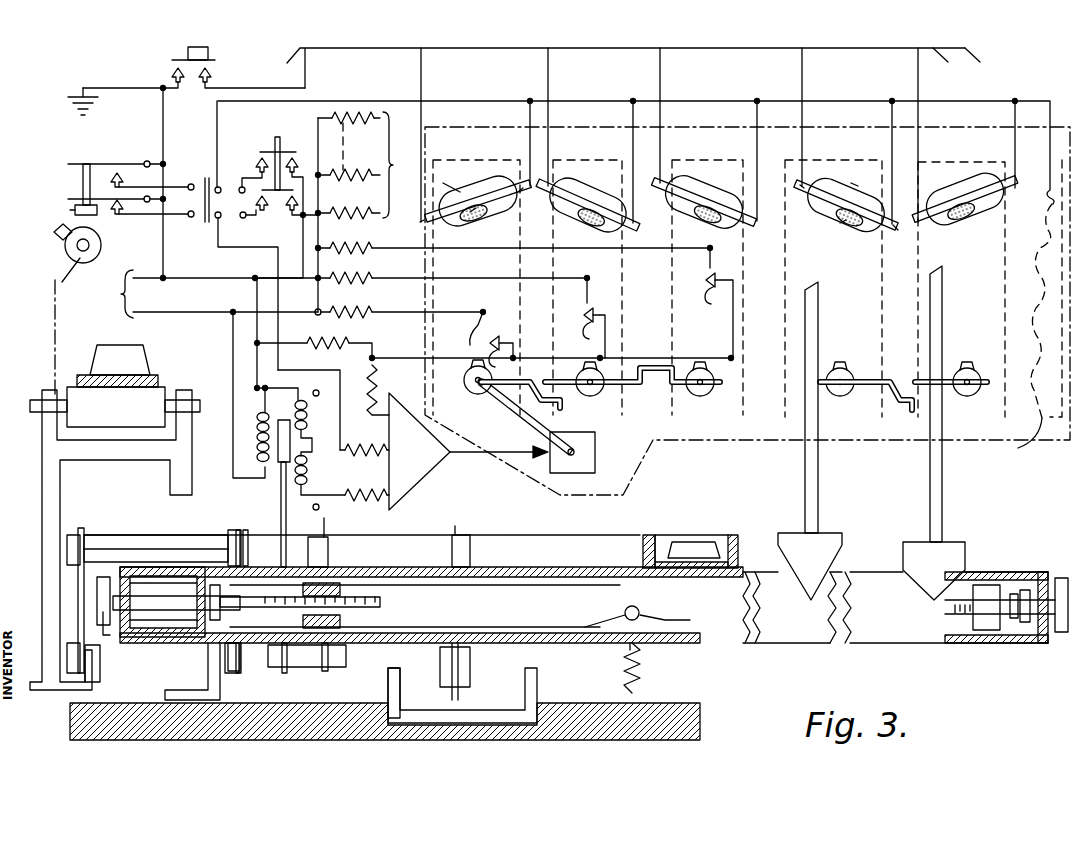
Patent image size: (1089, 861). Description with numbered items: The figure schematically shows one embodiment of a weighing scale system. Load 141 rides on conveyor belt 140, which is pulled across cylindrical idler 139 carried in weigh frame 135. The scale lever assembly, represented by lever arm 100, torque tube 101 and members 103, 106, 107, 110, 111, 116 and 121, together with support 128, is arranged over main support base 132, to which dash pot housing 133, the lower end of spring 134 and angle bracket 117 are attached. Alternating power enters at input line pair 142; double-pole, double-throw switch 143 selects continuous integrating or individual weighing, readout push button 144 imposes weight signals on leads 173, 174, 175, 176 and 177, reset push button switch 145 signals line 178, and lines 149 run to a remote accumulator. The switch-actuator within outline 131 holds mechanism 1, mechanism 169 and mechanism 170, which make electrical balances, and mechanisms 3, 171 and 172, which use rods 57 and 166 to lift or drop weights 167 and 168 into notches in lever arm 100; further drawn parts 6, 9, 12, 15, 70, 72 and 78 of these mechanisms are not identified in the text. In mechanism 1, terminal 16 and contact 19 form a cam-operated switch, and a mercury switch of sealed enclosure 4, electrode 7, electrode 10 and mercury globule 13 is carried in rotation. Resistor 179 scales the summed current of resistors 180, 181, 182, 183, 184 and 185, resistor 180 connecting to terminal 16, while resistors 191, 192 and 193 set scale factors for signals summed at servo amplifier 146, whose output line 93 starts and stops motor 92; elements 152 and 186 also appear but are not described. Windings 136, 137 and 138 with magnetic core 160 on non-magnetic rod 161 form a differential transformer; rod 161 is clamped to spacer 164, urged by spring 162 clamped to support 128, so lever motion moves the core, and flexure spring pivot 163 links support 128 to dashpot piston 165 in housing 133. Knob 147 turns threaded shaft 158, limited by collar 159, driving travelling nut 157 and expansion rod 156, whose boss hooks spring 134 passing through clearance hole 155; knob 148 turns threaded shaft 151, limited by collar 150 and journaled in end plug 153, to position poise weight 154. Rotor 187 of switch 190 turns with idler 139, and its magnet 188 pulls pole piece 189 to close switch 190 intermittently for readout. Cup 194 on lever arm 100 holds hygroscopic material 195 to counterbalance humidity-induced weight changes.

The mechanism 1 is at (486, 175).
The mechanism 3 is at (845, 190).
The sealed enclosure 4 is at (451, 182).
The switch envelope 6 is at (858, 176).
The electrode 7 is at (525, 190).
The switch arm 9 is at (899, 234).
The electrode 10 is at (420, 222).
The pivot 12 is at (802, 190).
The mercury globule 13 is at (480, 212).
The mercury 15 is at (852, 218).
The terminal 16 is at (482, 316).
The contact 19 is at (501, 342).
The rod 57 is at (818, 298).
The cam wheel 70 is at (464, 377).
The cam wheel 72 is at (842, 368).
The link 78 is at (520, 416).
The motor 92 is at (596, 452).
The output line 93 is at (499, 445).
The lever arm 100 is at (510, 568).
The torque tube 101 is at (148, 562).
The scale lever assembly member 103 is at (156, 548).
The scale lever assembly member 106 is at (90, 545).
The scale lever assembly member 107 is at (228, 532).
The scale lever assembly member 110 is at (80, 532).
The scale lever assembly member 111 is at (247, 530).
The scale lever assembly member 116 is at (92, 662).
The angle bracket 117 is at (178, 690).
The scale lever assembly member 121 is at (248, 659).
The support 128 is at (413, 589).
The switch-actuator outline 131 is at (1070, 127).
The main support base 132 is at (700, 710).
The dash pot housing 133 is at (388, 687).
The spring 134 is at (640, 612).
The weigh frame 135 is at (25, 532).
The winding 136 is at (257, 440).
The winding 137 is at (307, 432).
The winding 138 is at (307, 477).
The cylindrical idler 139 is at (115, 407).
The conveyor belt 140 is at (158, 381).
The load 141 is at (120, 360).
The input line pair 142 is at (186, 332).
The double-pole, double-throw switch 143 is at (225, 235).
The readout push button 144 is at (271, 200).
The reset push button switch 145 is at (194, 59).
The servo amplifier 146 is at (419, 451).
The knob 147 is at (106, 630).
The knob 148 is at (1062, 634).
The lines 149 is at (972, 61).
The collar 150 is at (1010, 632).
The threaded shaft 151 is at (1025, 588).
The housing 152 is at (975, 642).
The end plug 153 is at (1045, 580).
The poise weight 154 is at (973, 606).
The clearance hole 155 is at (655, 645).
The expansion rod 156 is at (562, 625).
The travelling nut 157 is at (380, 584).
The threaded shaft 158 is at (380, 603).
The collar 159 is at (200, 638).
The magnetic core 160 is at (282, 462).
The non-magnetic rod 161 is at (263, 614).
The spring 162 is at (322, 530).
The flexure spring pivot 163 is at (455, 535).
The spacer 164 is at (307, 656).
The dashpot piston 165 is at (482, 697).
The rod 166 is at (942, 490).
The weight 167 is at (810, 566).
The weight 168 is at (934, 571).
The mechanism 169 is at (587, 191).
The mechanism 170 is at (703, 188).
The mechanism 171 is at (965, 186).
The mechanism 172 is at (1026, 447).
The lead 173 is at (440, 135).
The lead 174 is at (566, 117).
The lead 175 is at (678, 115).
The lead 176 is at (802, 70).
The lead 177 is at (918, 78).
The line 178 is at (626, 68).
The resistor 179 is at (495, 341).
The resistor 180 is at (400, 306).
The resistor 181 is at (461, 309).
The resistor 182 is at (525, 294).
The resistor 183 is at (348, 206).
The resistor 184 is at (348, 169).
The resistor 185 is at (349, 141).
The resistor group 186 is at (402, 165).
The rotor 187 is at (101, 245).
The magnet 188 is at (54, 234).
The pole piece 189 is at (70, 210).
The double-pole switch 190 is at (128, 180).
The resistor 191 is at (388, 390).
The resistor 192 is at (364, 443).
The resistor 193 is at (367, 499).
The cup 194 is at (643, 546).
The hygroscopic material 195 is at (696, 551).